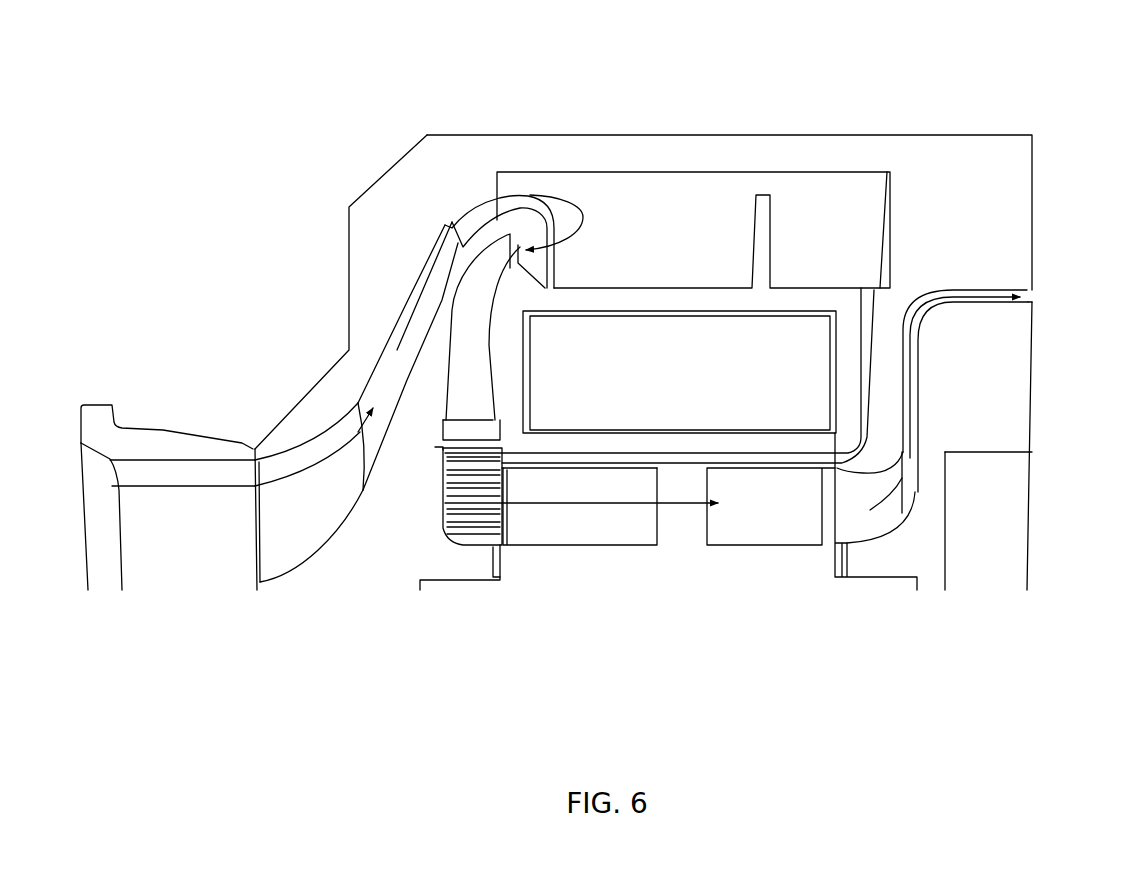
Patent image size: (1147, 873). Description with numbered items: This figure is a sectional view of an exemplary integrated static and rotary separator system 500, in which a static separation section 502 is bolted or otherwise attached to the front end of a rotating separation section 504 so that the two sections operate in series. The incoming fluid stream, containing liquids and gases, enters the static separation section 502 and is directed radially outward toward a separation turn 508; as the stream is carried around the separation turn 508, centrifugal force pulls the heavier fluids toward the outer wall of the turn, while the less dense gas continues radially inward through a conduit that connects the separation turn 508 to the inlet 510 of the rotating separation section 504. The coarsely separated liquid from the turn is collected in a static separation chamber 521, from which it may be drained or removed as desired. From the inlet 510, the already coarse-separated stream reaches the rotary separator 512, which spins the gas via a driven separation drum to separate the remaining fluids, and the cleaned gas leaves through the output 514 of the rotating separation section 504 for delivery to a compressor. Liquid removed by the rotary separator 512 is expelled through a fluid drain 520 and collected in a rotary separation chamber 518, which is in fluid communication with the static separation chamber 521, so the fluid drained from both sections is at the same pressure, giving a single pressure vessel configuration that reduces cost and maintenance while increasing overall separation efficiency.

The integrated static and rotary separator system 500 is at (190, 285).
The static separation section 502 is at (456, 147).
The rotating separation section 504 is at (770, 133).
The separation turn 508 is at (536, 203).
The inlet of the rotary separation section 510 is at (472, 530).
The rotary separator 512 is at (720, 518).
The output of the rotary separation section 514 is at (1033, 299).
The rotary separation chamber 518 is at (668, 194).
The fluid drain 520 is at (868, 300).
The static separation chamber 521 is at (586, 178).